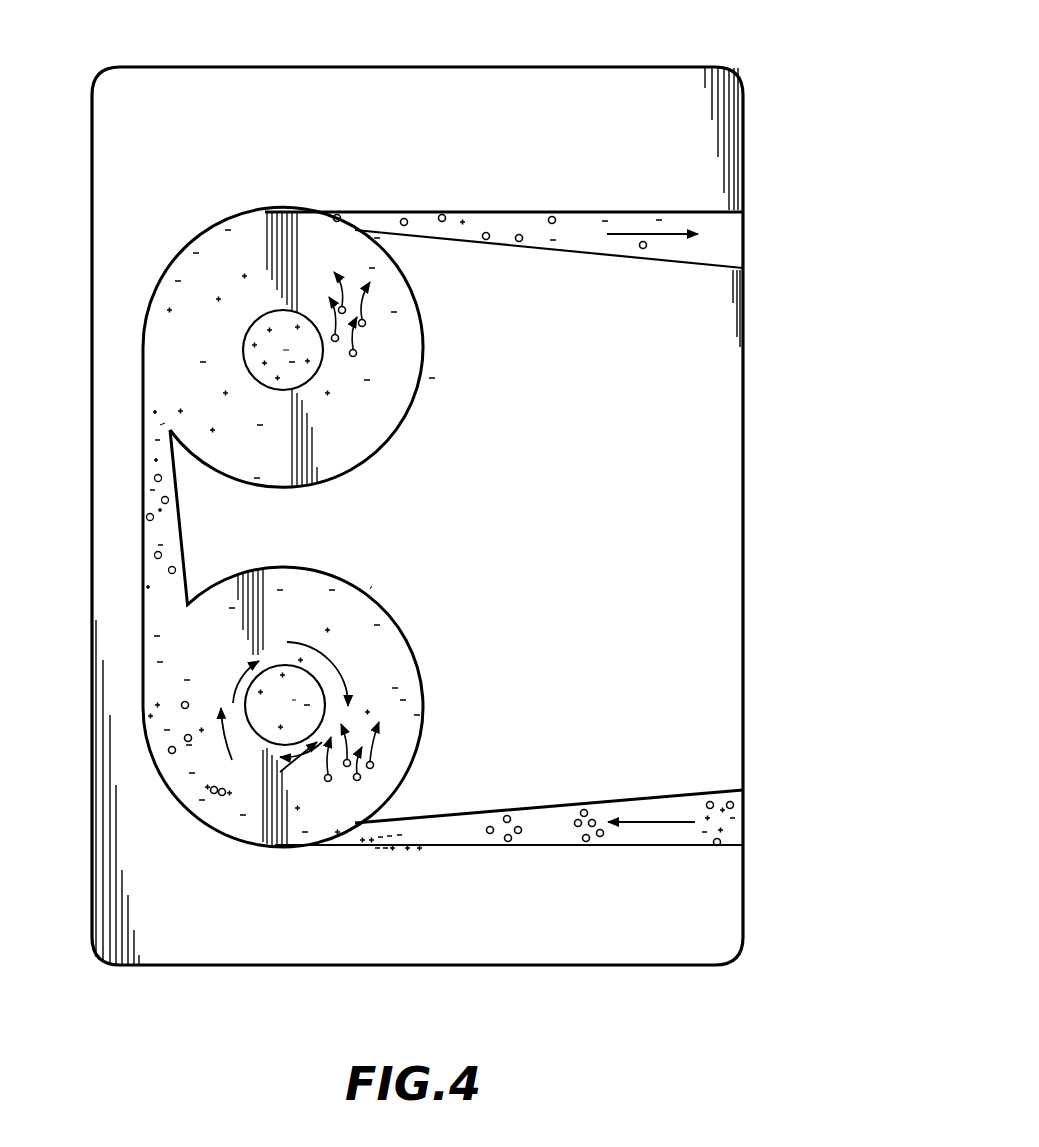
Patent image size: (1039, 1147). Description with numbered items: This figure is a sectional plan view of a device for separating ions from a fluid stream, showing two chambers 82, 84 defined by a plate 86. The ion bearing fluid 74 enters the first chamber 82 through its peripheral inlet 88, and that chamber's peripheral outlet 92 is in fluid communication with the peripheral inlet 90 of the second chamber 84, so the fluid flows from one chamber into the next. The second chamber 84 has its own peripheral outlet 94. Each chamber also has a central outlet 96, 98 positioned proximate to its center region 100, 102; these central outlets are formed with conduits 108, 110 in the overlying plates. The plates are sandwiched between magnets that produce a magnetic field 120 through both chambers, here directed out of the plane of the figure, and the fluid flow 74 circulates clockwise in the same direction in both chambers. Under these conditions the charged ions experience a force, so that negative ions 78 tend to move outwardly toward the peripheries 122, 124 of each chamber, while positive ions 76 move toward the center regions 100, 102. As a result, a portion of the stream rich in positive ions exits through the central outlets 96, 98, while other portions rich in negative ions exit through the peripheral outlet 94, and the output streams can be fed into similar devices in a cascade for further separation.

The ion bearing fluid 74 is at (215, 315).
The positive ions 76 is at (280, 723).
The negative ions 78 is at (188, 773).
The first chamber 82 is at (222, 795).
The second chamber 84 is at (170, 350).
The plate 86 is at (648, 88).
The peripheral inlet 88 is at (590, 838).
The peripheral inlet 90 is at (158, 427).
The peripheral outlet 92 is at (160, 602).
The peripheral outlet 94 is at (733, 228).
The central outlet 96 is at (320, 685).
The central outlet 98 is at (302, 375).
The center region 100 is at (292, 700).
The center region 102 is at (280, 350).
The conduit 108 is at (320, 760).
The conduit 110 is at (285, 318).
The magnetic field 120 is at (362, 323).
The periphery 122 is at (372, 586).
The periphery 124 is at (365, 460).